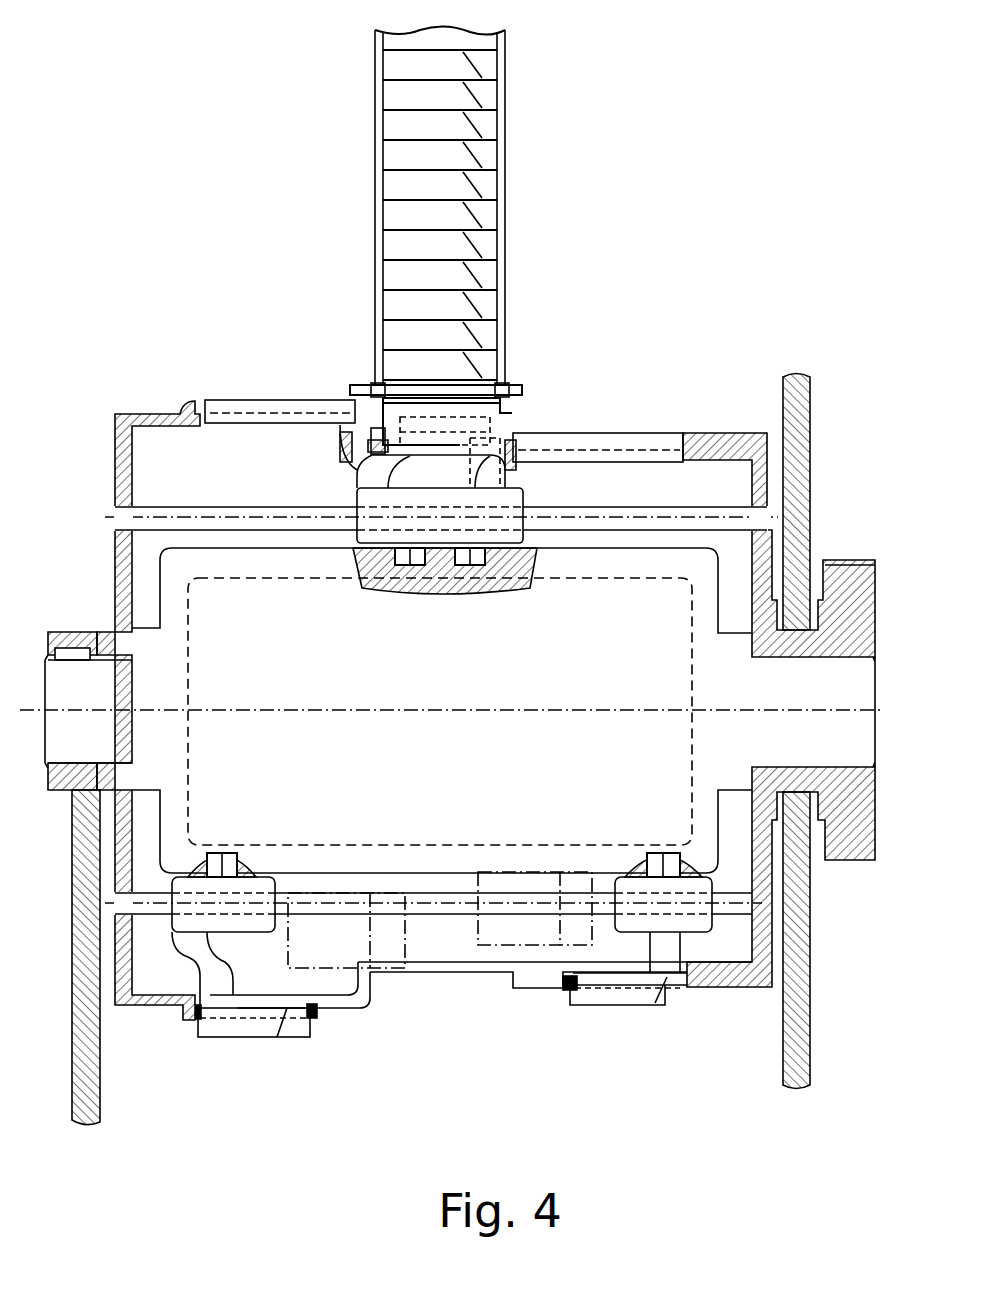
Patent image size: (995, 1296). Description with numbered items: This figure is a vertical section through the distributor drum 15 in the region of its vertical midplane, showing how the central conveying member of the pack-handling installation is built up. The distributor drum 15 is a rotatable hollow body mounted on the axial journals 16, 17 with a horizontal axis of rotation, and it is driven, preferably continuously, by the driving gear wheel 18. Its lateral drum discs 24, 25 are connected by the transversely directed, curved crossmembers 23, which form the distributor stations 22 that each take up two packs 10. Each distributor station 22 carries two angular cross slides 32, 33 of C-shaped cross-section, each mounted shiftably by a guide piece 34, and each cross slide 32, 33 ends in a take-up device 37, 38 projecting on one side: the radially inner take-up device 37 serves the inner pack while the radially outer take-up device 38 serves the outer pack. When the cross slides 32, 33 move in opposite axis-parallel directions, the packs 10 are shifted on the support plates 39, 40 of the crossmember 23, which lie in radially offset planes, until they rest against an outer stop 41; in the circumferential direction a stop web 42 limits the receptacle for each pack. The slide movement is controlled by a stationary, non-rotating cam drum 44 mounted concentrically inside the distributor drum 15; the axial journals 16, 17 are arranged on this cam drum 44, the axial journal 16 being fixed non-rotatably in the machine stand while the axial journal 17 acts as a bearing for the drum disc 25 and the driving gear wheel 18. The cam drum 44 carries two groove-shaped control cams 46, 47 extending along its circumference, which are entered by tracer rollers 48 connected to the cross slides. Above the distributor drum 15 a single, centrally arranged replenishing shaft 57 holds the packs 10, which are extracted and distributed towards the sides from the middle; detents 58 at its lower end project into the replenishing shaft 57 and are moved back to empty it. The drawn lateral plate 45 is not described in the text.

The packs 10 is at (460, 127).
The distributor drum 15 is at (218, 320).
The axial journal 16 is at (105, 686).
The axial journal 17 is at (835, 680).
The driving gear wheel 18 is at (852, 835).
The distributor station 22 is at (276, 310).
The crossmember 23 is at (150, 398).
The drum disc 24 is at (125, 462).
The drum disc 25 is at (797, 462).
The cross slide 32 is at (343, 445).
The cross slide 33 is at (520, 465).
The guide piece 34 is at (438, 552).
The take-up device 37 is at (505, 405).
The take-up device 38 is at (350, 455).
The support plate 39 is at (236, 418).
The support plate 40 is at (640, 459).
The outer stop 41 is at (190, 405).
The stop web 42 is at (620, 436).
The cam drum 44 is at (708, 578).
The side plate 45 is at (88, 1065).
The control cam 46 is at (400, 557).
The control cam 47 is at (478, 555).
The tracer roller 48 is at (395, 548).
The replenishing shaft 57 is at (520, 145).
The detent 58 is at (513, 397).